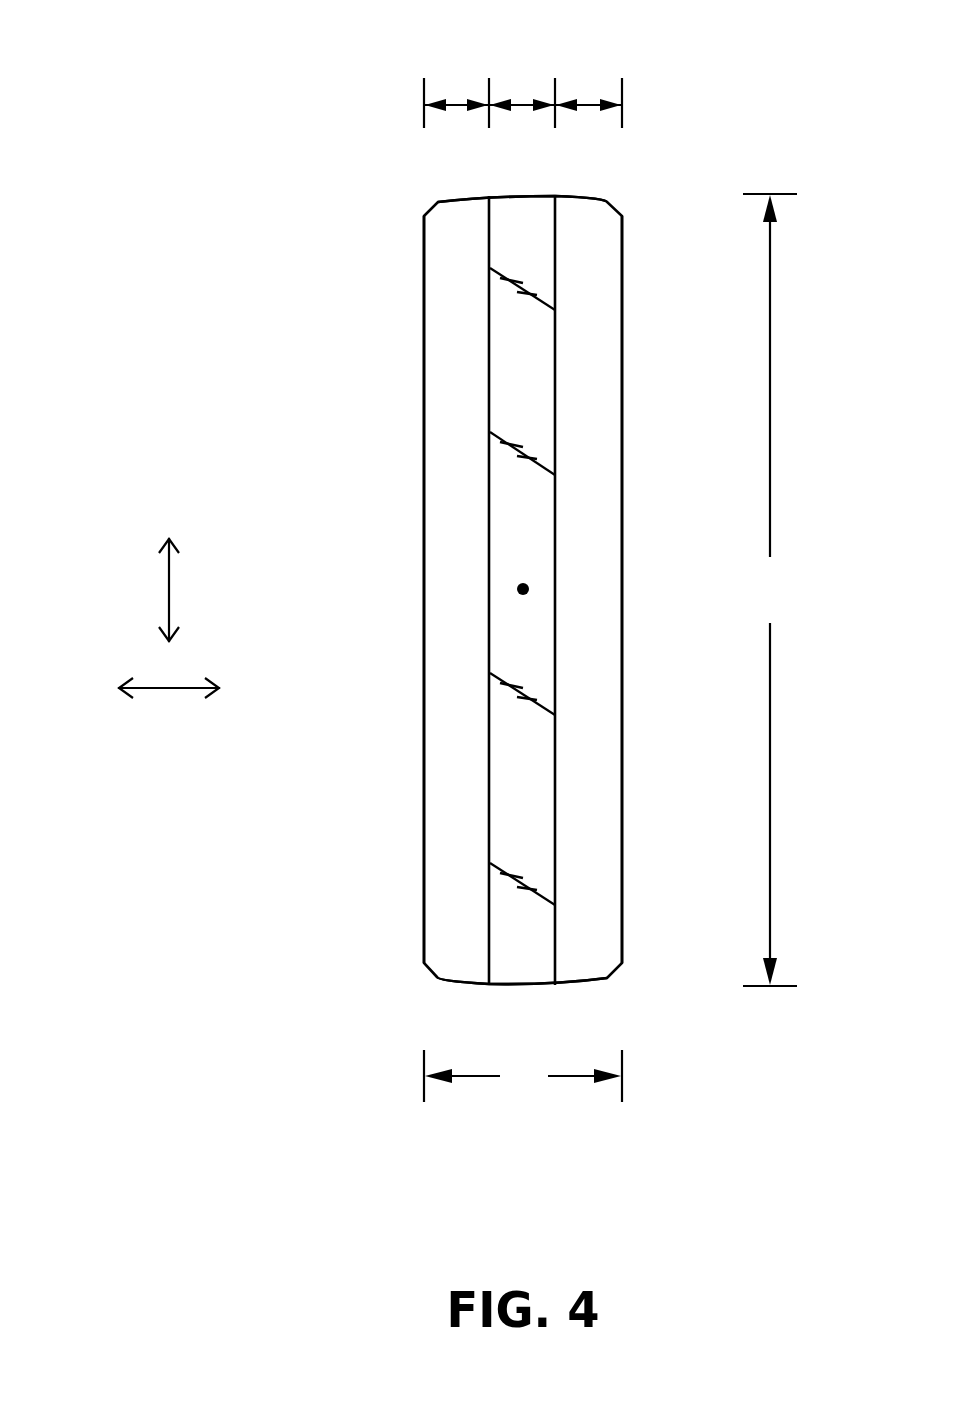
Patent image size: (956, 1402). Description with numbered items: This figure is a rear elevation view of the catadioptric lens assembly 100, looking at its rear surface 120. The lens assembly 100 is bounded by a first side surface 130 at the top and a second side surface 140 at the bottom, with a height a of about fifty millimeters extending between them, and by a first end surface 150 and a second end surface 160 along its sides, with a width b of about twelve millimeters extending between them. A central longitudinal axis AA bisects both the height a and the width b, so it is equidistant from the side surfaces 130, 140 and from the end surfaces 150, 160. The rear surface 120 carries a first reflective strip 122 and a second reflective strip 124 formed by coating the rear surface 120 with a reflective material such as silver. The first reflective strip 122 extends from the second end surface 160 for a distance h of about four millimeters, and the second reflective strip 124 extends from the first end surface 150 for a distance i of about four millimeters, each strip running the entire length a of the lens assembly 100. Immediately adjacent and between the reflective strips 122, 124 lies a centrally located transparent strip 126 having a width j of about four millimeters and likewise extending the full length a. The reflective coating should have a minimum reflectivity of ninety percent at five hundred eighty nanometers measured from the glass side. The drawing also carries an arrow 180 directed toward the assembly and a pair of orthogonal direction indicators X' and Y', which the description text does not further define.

The lens assembly 100 is at (250, 228).
The rear surface 120 is at (462, 622).
The first reflective strip 122 is at (440, 378).
The second reflective strip 124 is at (607, 274).
The transparent strip 126 is at (538, 521).
The first side surface 130 is at (522, 195).
The second side surface 140 is at (522, 985).
The first end surface 150 is at (624, 402).
The second end surface 160 is at (424, 476).
The lateral direction arrow 180 is at (405, 701).
The central longitudinal axis AA is at (529, 587).
The height a is at (770, 590).
The width b is at (523, 1076).
The distance h is at (455, 98).
The width j is at (522, 98).
The distance i is at (589, 98).
The X' axis X' is at (150, 576).
The Y' axis Y' is at (169, 728).